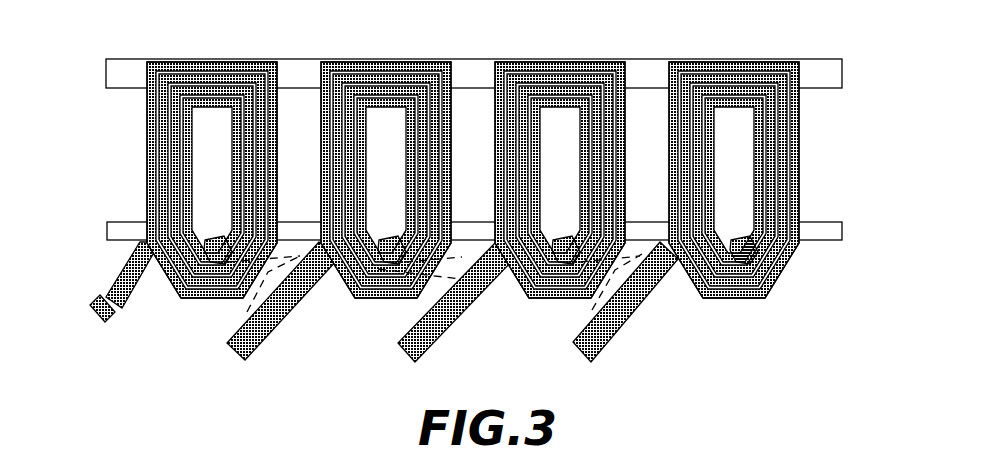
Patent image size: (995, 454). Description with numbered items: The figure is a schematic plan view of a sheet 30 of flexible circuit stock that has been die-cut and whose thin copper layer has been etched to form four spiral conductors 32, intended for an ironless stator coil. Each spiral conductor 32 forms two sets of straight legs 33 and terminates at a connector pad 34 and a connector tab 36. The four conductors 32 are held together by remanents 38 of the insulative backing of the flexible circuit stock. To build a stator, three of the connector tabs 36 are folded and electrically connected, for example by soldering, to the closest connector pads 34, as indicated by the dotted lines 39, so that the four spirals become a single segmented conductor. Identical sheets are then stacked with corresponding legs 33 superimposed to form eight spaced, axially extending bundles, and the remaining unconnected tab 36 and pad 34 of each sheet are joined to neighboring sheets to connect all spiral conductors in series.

The sheet 30 is at (147, 162).
The spiral conductor 32 is at (237, 76).
The straight legs 33 is at (306, 127).
The connector pad 34 is at (210, 258).
The connector tab 36 is at (128, 305).
The remanents 38 is at (474, 75).
The dotted lines 39 is at (431, 294).